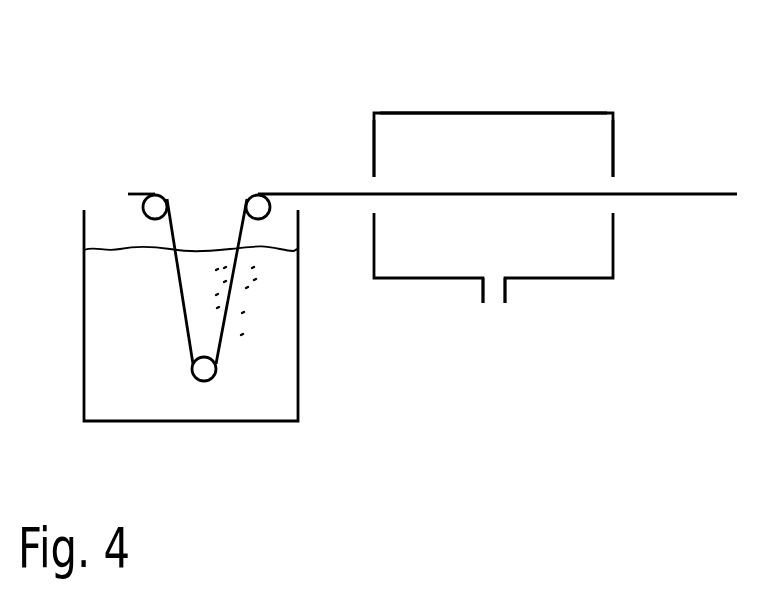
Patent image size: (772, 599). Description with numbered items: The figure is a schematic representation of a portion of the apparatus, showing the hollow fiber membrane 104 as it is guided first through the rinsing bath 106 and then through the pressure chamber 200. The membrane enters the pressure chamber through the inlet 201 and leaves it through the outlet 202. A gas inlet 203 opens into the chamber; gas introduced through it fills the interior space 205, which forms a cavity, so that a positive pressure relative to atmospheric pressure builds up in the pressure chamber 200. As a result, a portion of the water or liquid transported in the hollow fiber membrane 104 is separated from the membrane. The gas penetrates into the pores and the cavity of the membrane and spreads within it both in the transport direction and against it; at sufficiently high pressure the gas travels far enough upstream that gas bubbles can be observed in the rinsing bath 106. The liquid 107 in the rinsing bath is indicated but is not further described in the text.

The hollow fiber membrane 104 is at (668, 197).
The rinsing bath 106 is at (245, 412).
The liquid 107 is at (252, 298).
The pressure chamber 200 is at (443, 112).
The inlet 201 is at (374, 186).
The outlet 202 is at (613, 188).
The gas inlet 203 is at (493, 298).
The interior space 205 is at (538, 127).